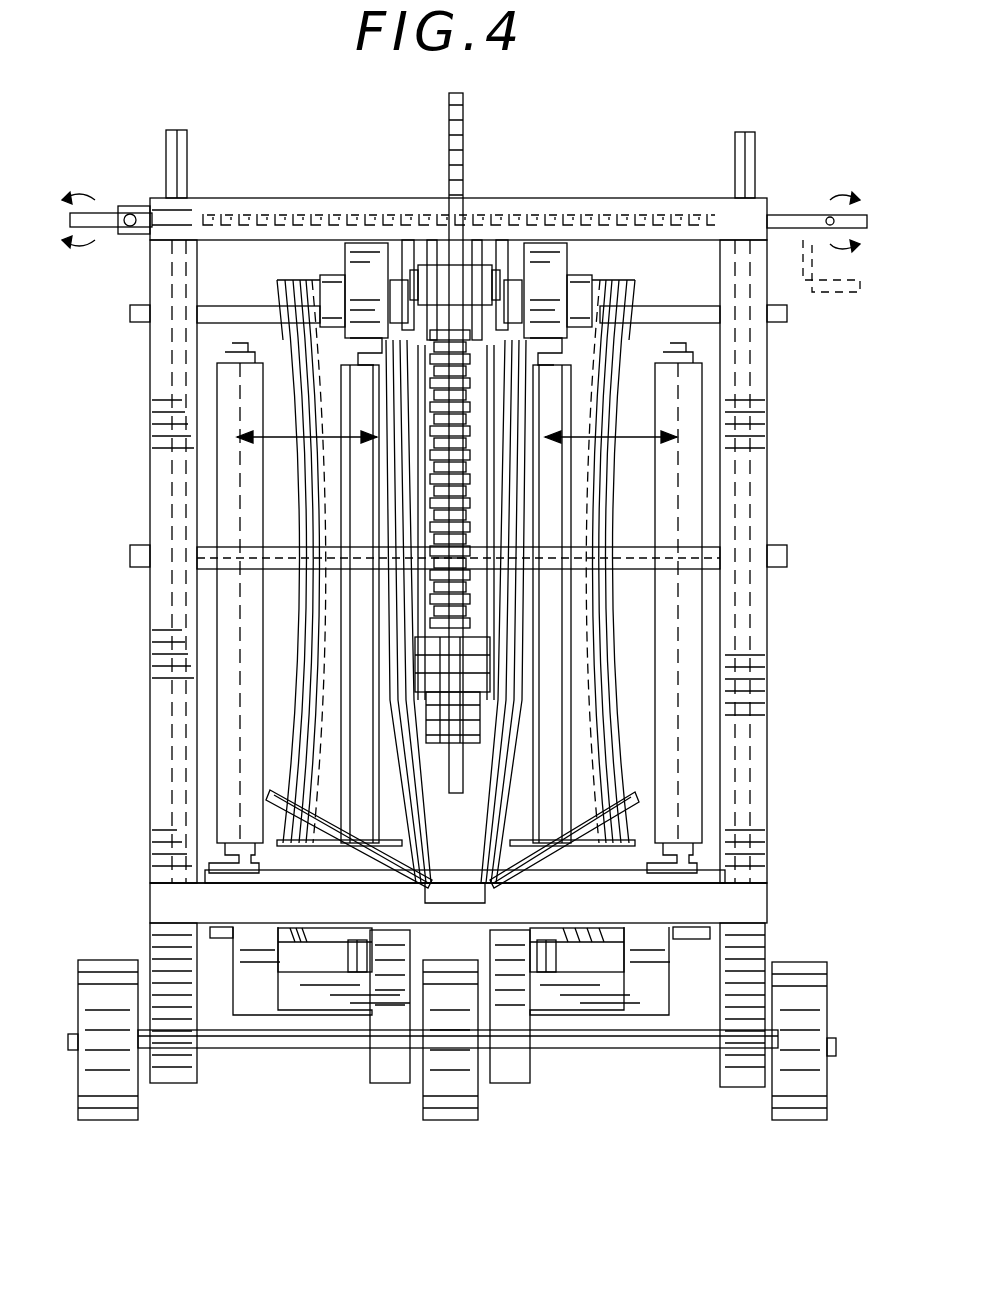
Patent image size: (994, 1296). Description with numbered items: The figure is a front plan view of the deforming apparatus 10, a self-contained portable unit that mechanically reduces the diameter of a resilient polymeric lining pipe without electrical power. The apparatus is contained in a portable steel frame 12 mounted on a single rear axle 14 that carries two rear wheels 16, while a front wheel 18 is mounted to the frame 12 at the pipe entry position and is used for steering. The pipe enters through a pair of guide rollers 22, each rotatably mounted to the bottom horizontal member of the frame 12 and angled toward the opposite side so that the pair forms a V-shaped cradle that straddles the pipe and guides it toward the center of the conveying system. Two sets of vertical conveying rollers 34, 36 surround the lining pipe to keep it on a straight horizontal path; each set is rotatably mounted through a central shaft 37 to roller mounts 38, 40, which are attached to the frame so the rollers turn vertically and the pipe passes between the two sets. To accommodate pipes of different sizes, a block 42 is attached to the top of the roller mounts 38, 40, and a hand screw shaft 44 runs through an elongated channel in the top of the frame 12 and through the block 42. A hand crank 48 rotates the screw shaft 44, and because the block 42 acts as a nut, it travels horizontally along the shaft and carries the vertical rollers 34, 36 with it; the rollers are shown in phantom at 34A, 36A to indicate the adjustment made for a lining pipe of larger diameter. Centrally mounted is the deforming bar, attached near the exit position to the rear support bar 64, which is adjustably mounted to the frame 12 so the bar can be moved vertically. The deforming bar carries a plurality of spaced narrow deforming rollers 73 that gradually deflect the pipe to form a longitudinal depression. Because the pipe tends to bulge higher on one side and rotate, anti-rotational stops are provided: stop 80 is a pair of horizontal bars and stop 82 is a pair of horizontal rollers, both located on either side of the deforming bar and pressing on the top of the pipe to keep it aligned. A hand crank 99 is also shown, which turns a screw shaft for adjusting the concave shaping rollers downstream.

The deforming apparatus 10 is at (778, 666).
The frame 12 is at (750, 775).
The rear axle 14 is at (648, 1050).
The rear wheels 16 is at (812, 1025).
The front wheel 18 is at (425, 1105).
The guide rollers 22 is at (515, 885).
The vertical conveying rollers 34 is at (545, 525).
The vertical rollers in phantom 34A is at (705, 398).
The vertical conveying rollers 36 is at (350, 505).
The vertical rollers in phantom 36A is at (215, 398).
The central shaft 37 is at (745, 838).
The roller mount 38 is at (556, 243).
The roller mount 40 is at (358, 243).
The block 42 is at (372, 200).
The hand screw shaft 44 is at (668, 200).
The hand crank 48 is at (787, 215).
The rear support bar 64 is at (463, 128).
The deforming rollers 73 is at (452, 743).
The anti-rotational stop 80 is at (787, 550).
The anti-rotational stop 82 is at (504, 240).
The hand crank 99 is at (123, 206).